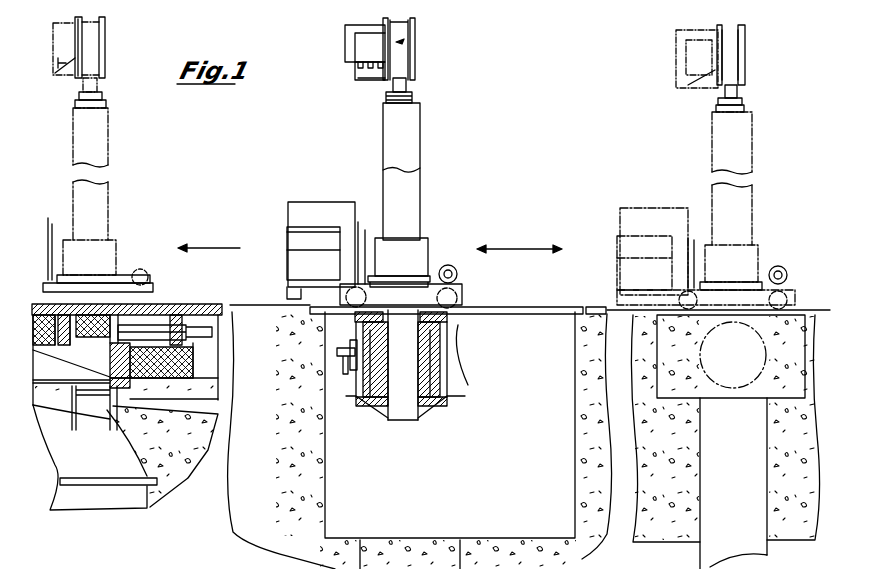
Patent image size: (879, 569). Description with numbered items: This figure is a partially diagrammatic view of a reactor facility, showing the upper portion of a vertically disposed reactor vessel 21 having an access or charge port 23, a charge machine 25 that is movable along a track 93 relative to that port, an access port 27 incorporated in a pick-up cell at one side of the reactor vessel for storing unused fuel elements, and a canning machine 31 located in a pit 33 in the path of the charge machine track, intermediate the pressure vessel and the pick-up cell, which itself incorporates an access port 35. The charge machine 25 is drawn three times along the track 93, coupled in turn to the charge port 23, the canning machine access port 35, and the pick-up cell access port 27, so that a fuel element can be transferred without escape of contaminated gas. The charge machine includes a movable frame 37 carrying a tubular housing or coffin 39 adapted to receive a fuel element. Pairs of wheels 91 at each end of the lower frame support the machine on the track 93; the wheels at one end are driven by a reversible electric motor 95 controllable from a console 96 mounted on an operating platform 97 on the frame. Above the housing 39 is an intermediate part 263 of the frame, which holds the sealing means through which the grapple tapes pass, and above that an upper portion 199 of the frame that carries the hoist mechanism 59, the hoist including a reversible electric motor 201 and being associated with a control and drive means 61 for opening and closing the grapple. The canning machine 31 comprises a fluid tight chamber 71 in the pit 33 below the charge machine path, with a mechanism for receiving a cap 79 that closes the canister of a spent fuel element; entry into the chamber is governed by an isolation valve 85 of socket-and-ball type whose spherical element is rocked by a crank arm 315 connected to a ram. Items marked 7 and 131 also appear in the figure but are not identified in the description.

The section line indicator 7 is at (138, 548).
The reactor vessel 21 is at (108, 467).
The access or charge port 23 is at (111, 292).
The charge machine 25 is at (111, 144).
The access port 27 is at (762, 285).
The canning machine 31 is at (515, 468).
The pit 33 is at (325, 482).
The access port 35 is at (403, 325).
The frame 37 is at (437, 272).
The tubular housing 39 is at (410, 122).
The hoist mechanism 59 is at (345, 72).
The control and drive means 61 is at (412, 44).
The fluid tight chamber 71 is at (468, 339).
The cap 79 is at (756, 430).
The isolation valve 85 is at (410, 364).
The wheels 91 is at (473, 307).
The track 93 is at (340, 300).
The reversible electric motor 95 is at (457, 268).
The console 96 is at (320, 205).
The operating platform 97 is at (293, 293).
The foundation 131 is at (208, 568).
The upper portion of the frame 199 is at (405, 66).
The reversible electric motor 201 is at (382, 62).
The intermediate part of the frame 263 is at (405, 86).
The crank arm 315 is at (340, 369).